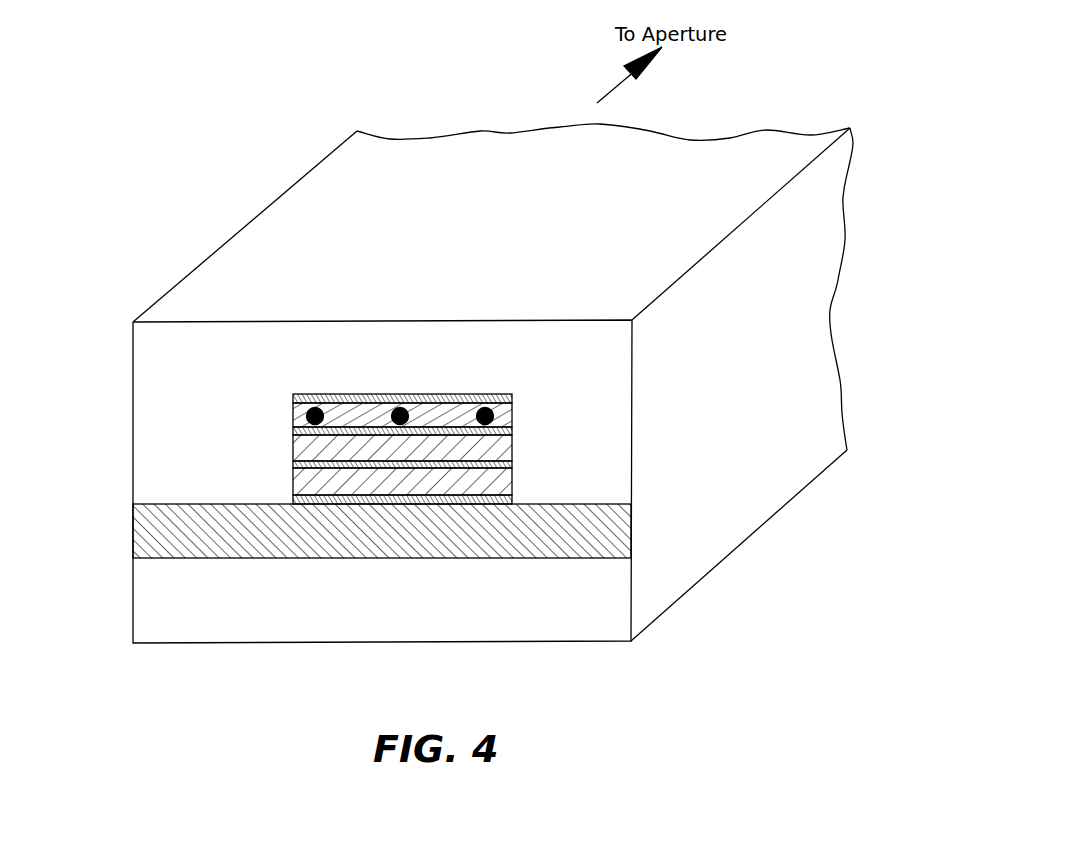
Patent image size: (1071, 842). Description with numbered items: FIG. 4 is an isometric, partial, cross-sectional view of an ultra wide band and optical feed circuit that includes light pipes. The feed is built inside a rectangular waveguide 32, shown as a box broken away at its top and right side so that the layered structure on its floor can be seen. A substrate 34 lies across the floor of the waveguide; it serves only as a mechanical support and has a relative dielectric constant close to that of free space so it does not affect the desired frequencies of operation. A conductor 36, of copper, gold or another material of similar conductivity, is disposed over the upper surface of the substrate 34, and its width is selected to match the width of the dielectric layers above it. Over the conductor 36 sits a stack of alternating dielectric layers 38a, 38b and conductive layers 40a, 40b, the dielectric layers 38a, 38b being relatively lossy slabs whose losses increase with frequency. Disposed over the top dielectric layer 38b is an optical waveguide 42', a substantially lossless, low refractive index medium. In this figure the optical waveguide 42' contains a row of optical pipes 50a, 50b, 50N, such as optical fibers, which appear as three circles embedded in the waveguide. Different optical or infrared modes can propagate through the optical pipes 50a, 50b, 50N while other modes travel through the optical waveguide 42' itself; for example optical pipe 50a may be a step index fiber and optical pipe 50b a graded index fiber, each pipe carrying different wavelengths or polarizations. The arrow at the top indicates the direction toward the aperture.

The rectangular waveguide 32 is at (248, 223).
The substrate 34 is at (160, 528).
The conductor 36 is at (293, 499).
The dielectric layer 38a is at (513, 486).
The dielectric layer 38b is at (513, 450).
The conductive layer 40a is at (293, 468).
The conductive layer 40b is at (293, 432).
The optical waveguide 42' is at (447, 410).
The optical pipe 50a is at (308, 394).
The optical pipe 50b is at (394, 394).
The optical pipe 50N is at (487, 394).